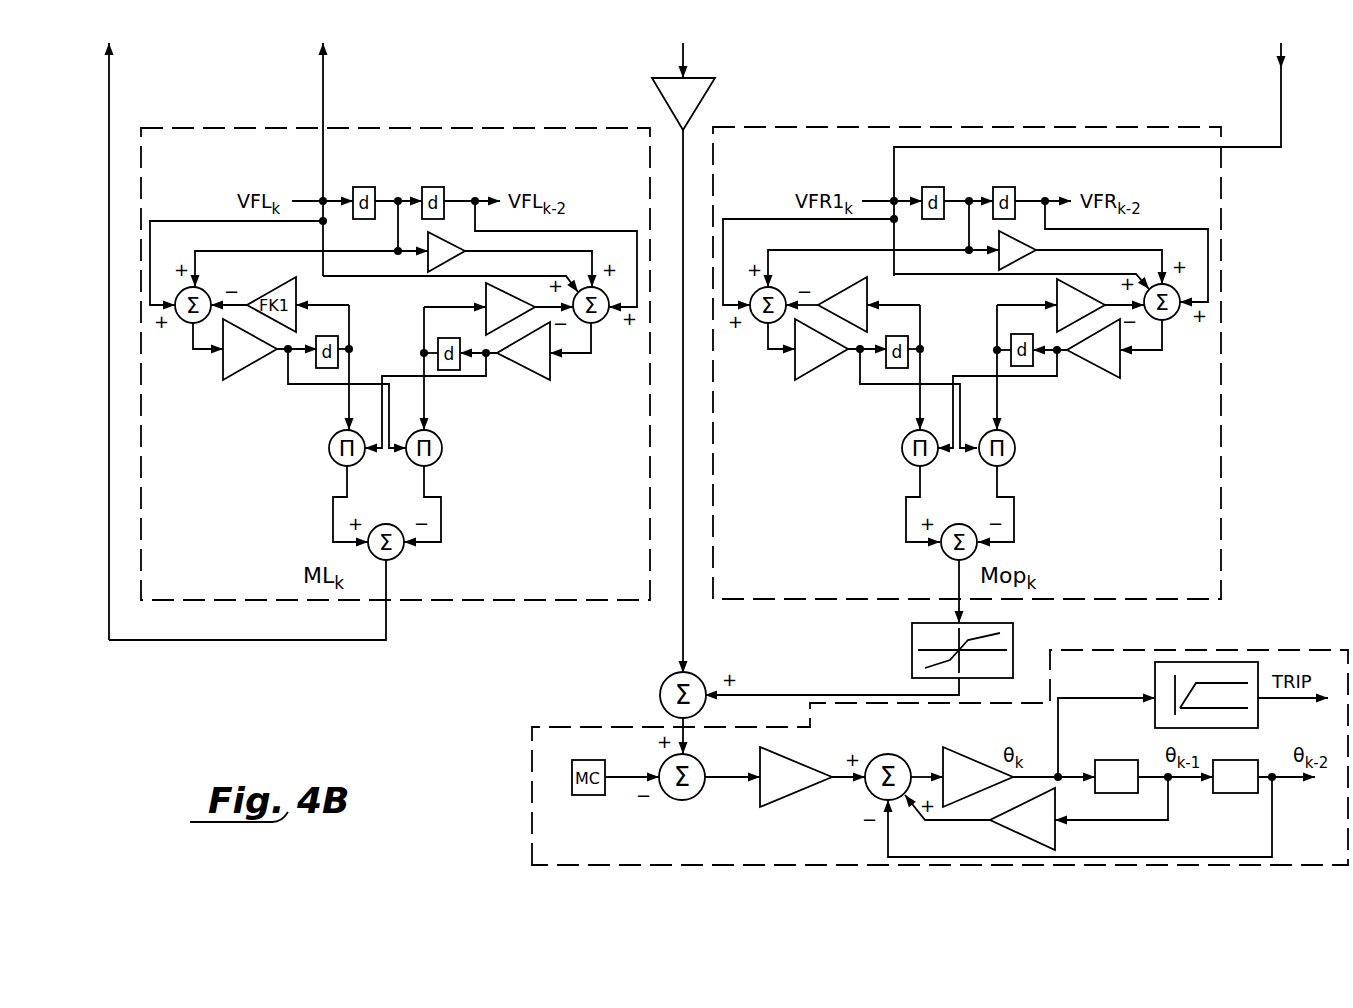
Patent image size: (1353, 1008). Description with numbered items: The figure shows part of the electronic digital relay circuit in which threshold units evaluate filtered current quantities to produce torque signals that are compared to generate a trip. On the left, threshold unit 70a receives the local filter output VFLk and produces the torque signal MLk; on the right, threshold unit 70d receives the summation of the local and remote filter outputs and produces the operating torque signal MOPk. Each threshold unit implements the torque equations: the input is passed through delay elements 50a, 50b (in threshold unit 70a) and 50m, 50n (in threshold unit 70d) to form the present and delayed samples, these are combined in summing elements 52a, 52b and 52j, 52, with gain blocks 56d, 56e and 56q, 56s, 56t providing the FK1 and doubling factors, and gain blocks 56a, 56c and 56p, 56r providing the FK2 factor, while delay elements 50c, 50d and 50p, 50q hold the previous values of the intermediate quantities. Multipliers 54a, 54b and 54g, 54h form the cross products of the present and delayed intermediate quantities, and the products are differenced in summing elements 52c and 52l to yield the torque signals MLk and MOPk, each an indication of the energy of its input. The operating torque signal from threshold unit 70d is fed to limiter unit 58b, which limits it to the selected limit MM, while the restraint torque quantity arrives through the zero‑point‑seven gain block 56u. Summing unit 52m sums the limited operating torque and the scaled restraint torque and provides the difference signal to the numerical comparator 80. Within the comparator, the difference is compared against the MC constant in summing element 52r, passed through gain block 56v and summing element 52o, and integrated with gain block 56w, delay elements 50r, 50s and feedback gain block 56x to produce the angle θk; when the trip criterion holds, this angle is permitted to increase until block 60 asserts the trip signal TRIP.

The threshold unit 70a is at (430, 128).
The threshold unit 70d is at (1221, 380).
The delay element 50a is at (372, 187).
The delay element 50b is at (444, 187).
The delay element 50c is at (322, 368).
The delay element 50d is at (450, 370).
The delay element 50m is at (941, 187).
The delay element 50n is at (1010, 187).
The delay element 50p is at (893, 368).
The delay element 50q is at (1023, 366).
The delay element 50r is at (1106, 760).
The delay element 50s is at (1236, 793).
The summer 52 is at (1170, 320).
The summer 52a is at (183, 321).
The summer 52b is at (598, 323).
The summer 52c is at (400, 555).
The summer 52j is at (758, 321).
The summer 52l is at (941, 550).
The summing unit 52m is at (660, 692).
The summer 52o is at (878, 756).
The summer 52r is at (680, 800).
The multiplier 54a is at (331, 458).
The multiplier 54b is at (440, 458).
The multiplier 54g is at (904, 458).
The multiplier 54h is at (1013, 458).
The gain unit 56a is at (238, 372).
The gain block FK2 56c is at (543, 376).
The gain block FK1 56d is at (486, 295).
The gain block 2 56e is at (437, 268).
The gain block FK2 56p is at (812, 372).
The gain block FK1 56q is at (840, 290).
The gain block FK2 56r is at (1113, 376).
The gain block FK1 56s is at (1057, 291).
The gain block 2 56t is at (1008, 267).
The gain block 0.7 56u is at (705, 98).
The gain block CC 56v is at (778, 805).
The gain block EE 56w is at (962, 747).
The gain block FF 56x is at (1012, 830).
The limiter unit 58b is at (912, 650).
The trip function block 60 is at (1155, 672).
The numerical comparator 80 is at (532, 750).